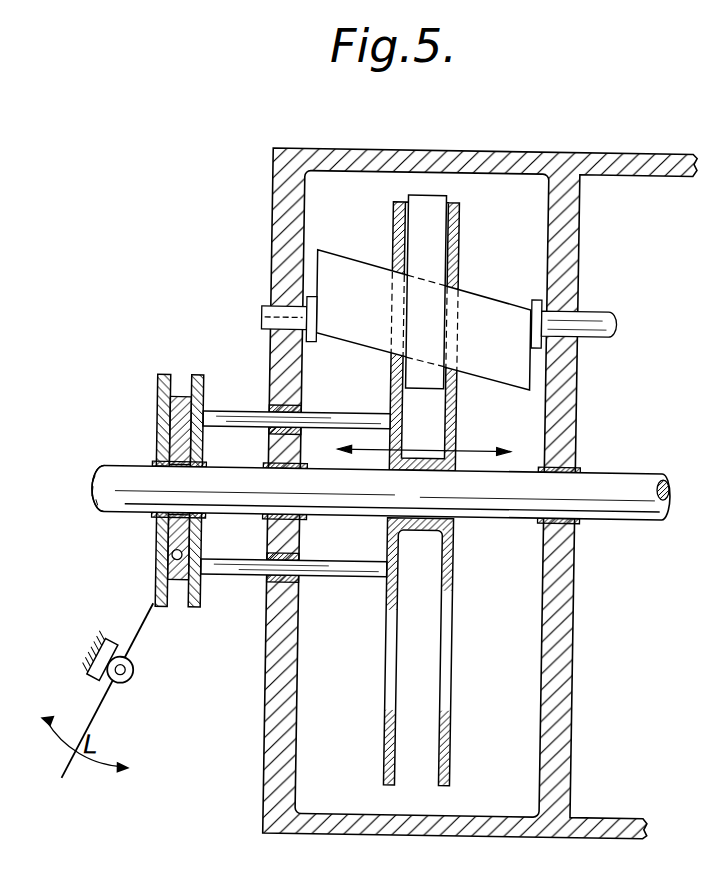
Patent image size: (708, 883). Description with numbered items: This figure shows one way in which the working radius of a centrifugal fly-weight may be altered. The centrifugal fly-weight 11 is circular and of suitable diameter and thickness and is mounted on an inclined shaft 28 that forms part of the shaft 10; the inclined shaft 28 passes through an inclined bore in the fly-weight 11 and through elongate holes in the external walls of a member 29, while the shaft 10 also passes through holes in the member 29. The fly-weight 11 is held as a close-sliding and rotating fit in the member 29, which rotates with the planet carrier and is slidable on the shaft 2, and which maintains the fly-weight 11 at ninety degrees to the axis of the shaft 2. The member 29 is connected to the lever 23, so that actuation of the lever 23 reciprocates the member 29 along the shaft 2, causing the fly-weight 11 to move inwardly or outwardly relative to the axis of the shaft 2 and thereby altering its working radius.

The shaft 2 is at (112, 471).
The shaft 10 is at (590, 314).
The centrifugal fly-weight 11 is at (453, 243).
The lever 23 is at (135, 647).
The inclined shaft 28 is at (479, 306).
The member 29 is at (456, 404).